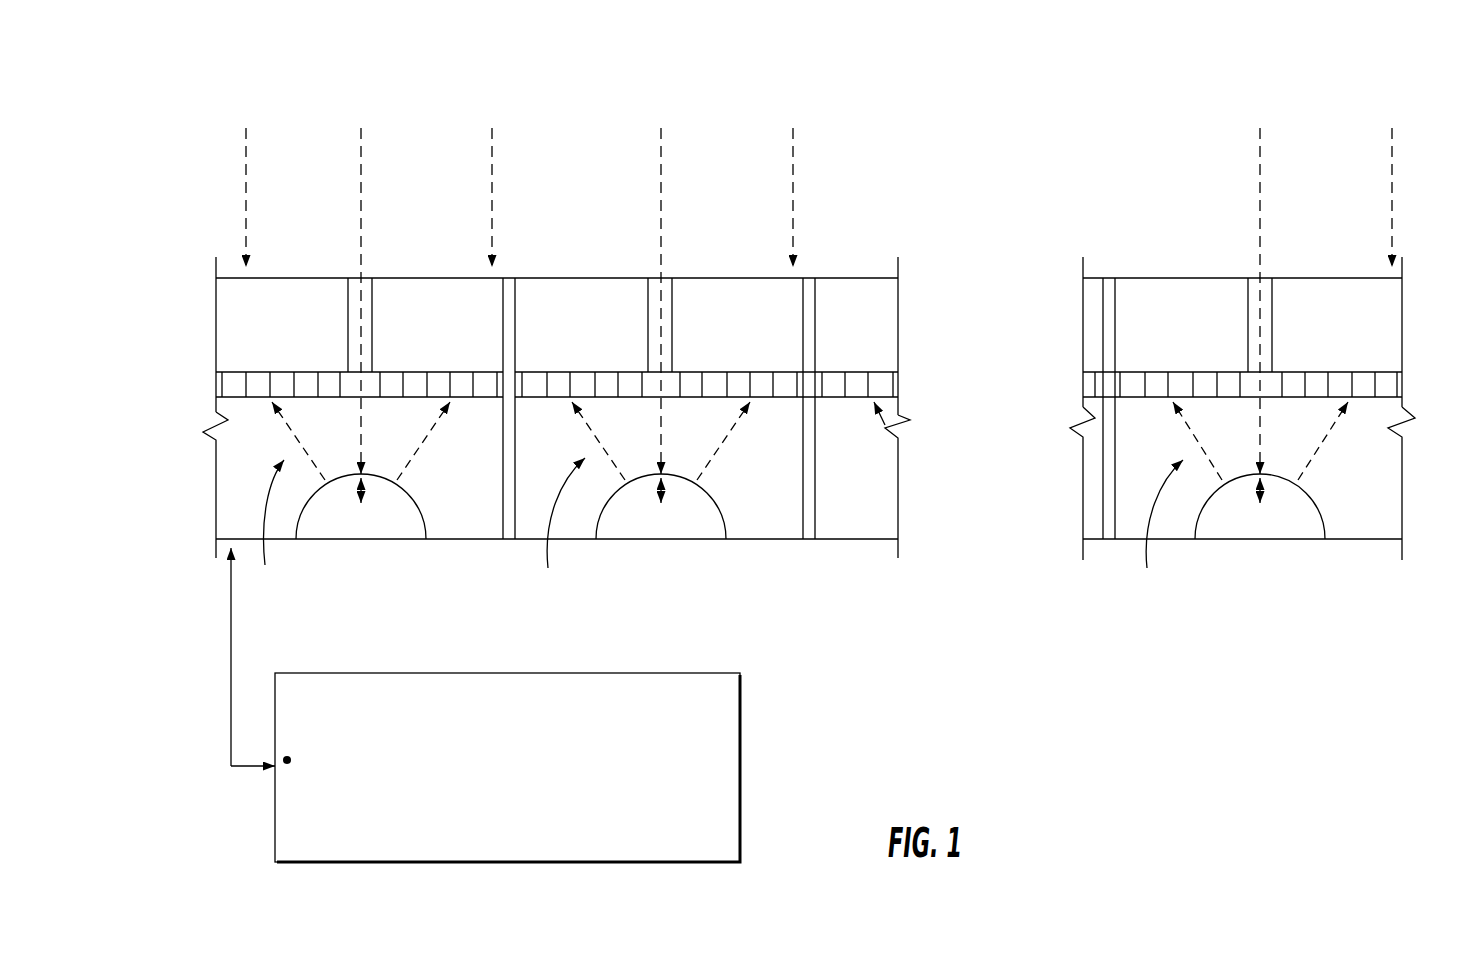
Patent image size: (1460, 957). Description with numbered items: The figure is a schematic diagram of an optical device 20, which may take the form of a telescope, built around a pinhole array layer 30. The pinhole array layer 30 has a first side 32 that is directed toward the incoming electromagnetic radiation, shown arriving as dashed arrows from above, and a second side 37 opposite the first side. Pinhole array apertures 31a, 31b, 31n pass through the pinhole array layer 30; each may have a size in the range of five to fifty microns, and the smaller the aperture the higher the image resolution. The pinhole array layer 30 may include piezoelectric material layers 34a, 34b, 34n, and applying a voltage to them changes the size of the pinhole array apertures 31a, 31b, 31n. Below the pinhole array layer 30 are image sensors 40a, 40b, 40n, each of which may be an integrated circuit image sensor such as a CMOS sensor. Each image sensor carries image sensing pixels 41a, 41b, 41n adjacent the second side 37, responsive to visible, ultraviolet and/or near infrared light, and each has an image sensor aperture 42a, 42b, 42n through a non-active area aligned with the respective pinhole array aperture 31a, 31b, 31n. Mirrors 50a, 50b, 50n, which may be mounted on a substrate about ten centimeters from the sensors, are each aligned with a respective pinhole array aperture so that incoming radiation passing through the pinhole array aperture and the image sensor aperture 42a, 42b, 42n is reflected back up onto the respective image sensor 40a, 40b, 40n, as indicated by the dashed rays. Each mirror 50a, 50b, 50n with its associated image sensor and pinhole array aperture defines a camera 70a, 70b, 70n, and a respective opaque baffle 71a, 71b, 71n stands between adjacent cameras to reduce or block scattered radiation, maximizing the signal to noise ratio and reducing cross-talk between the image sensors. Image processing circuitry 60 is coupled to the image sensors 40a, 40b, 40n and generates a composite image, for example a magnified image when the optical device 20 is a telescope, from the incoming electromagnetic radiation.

The optical device 20 is at (163, 117).
The pinhole array layer 30 is at (216, 318).
The first side 32 is at (227, 278).
The piezoelectric material layer 34a is at (288, 303).
The piezoelectric material layer 34b is at (740, 305).
The piezoelectric material layer 34n is at (1330, 305).
The pinhole array aperture 31a is at (364, 285).
The pinhole array aperture 31b is at (663, 285).
The pinhole array aperture 31n is at (1265, 285).
The second side 37 is at (255, 372).
The image sensor 40a is at (216, 384).
The image sensor 40b is at (898, 387).
The image sensor 40n is at (1407, 387).
The image sensing pixels 41a is at (263, 392).
The image sensing pixels 41b is at (762, 388).
The image sensing pixels 41n is at (1362, 388).
The image sensor aperture 42a is at (367, 382).
The image sensor aperture 42b is at (667, 382).
The image sensor aperture 42n is at (1265, 382).
The mirror 50a is at (402, 527).
The mirror 50b is at (700, 528).
The mirror 50n is at (1300, 528).
The image processing circuitry 60 is at (740, 798).
The camera 70a is at (269, 530).
The camera 70b is at (559, 529).
The camera 70n is at (1157, 530).
The opaque baffle 71a is at (509, 530).
The opaque baffle 71b is at (809, 530).
The opaque baffle 71n is at (1107, 530).